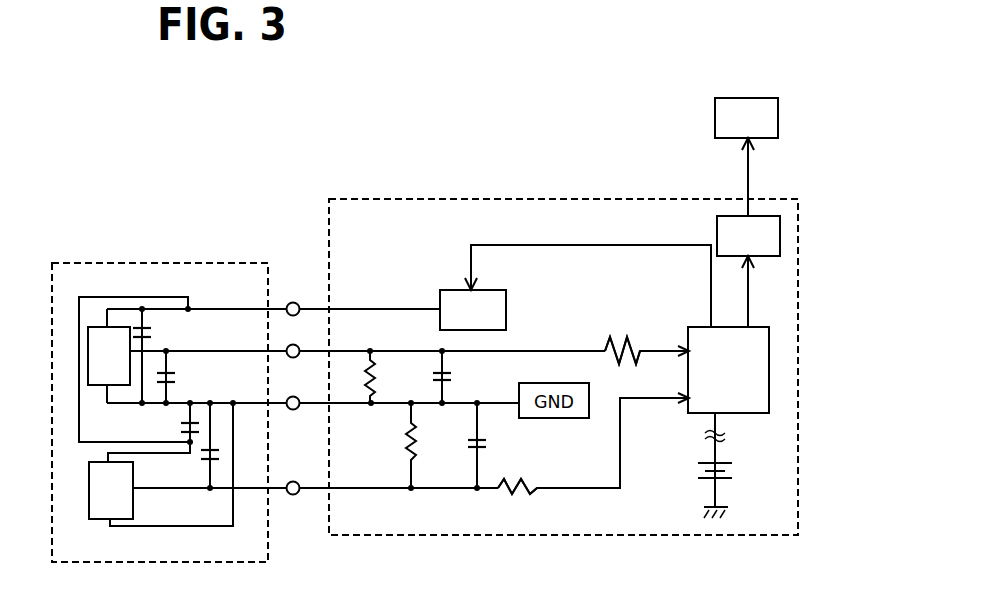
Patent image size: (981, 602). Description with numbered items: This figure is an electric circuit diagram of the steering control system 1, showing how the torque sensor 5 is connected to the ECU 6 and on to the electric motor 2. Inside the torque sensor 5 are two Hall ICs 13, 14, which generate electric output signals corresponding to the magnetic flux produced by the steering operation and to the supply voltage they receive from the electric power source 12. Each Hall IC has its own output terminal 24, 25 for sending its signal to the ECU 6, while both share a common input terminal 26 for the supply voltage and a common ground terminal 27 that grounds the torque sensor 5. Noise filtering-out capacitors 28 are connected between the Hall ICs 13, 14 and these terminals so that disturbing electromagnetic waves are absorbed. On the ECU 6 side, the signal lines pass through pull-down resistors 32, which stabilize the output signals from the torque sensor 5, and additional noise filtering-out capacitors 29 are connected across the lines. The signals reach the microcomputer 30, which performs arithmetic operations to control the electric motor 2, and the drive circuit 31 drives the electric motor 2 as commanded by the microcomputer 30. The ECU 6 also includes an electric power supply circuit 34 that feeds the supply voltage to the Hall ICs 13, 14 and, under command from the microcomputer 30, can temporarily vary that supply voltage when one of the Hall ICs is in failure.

The electric power steering control system 1 is at (103, 85).
The electric motor 2 is at (746, 98).
The torque sensor 5 is at (141, 262).
The ECU 6 is at (480, 198).
The electric power source 12 is at (698, 476).
The Hall IC 13 is at (80, 353).
The Hall IC 14 is at (89, 490).
The output terminal 24 is at (298, 346).
The output terminal 25 is at (293, 495).
The common input terminal 26 is at (293, 302).
The common ground terminal 27 is at (293, 410).
The noise filtering-out capacitor 28 is at (150, 324).
The noise filtering-out capacitor 29 is at (449, 380).
The microcomputer 30 is at (697, 327).
The drive circuit 31 is at (780, 240).
The pull-down resistor 32 is at (614, 337).
The electric power supply circuit 34 is at (441, 290).